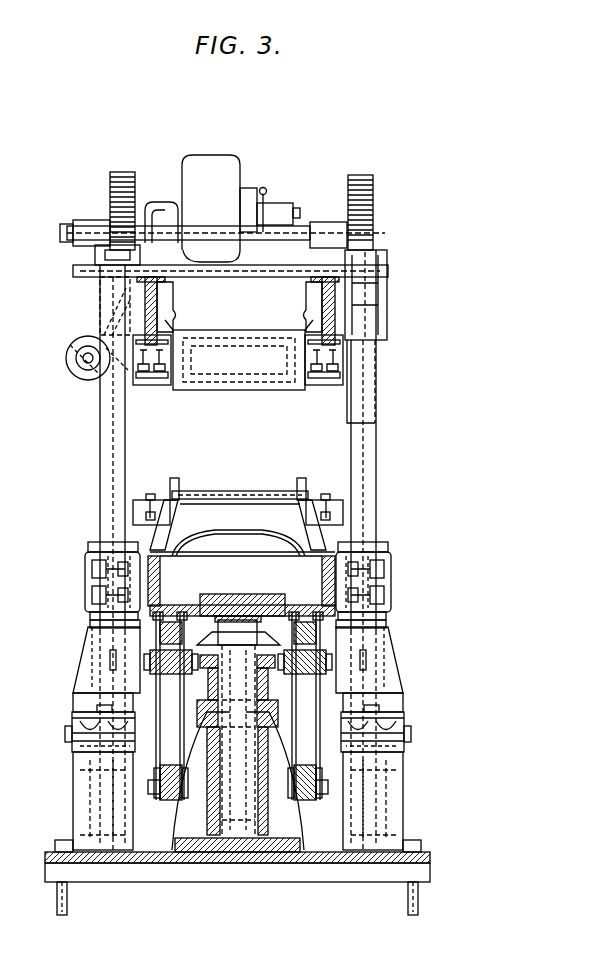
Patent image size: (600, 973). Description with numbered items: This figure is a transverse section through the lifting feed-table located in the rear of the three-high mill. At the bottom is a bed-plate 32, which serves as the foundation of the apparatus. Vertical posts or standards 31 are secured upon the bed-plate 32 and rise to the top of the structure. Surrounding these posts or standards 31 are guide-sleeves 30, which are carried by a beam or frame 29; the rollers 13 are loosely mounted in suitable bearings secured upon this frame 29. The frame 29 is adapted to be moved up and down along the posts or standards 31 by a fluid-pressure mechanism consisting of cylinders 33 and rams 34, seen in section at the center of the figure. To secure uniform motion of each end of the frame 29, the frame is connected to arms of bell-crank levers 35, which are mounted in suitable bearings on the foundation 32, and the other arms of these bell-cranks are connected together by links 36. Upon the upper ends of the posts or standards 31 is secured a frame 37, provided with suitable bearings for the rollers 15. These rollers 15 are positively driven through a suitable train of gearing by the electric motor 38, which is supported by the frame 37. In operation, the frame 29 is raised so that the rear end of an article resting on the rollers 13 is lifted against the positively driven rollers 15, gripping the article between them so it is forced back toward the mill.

The electric motor 38 is at (222, 208).
The frame 37 is at (153, 300).
The rollers 15 is at (239, 368).
The posts or standards 31 is at (102, 449).
The rollers 13 is at (238, 547).
The guide-sleeves 30 is at (88, 582).
The beam or frame 29 is at (277, 608).
The cylinders 33 is at (258, 660).
The rams 34 is at (237, 740).
The links 36 is at (148, 660).
The bell-crank levers 35 is at (350, 742).
The bed-plate 32 is at (76, 797).